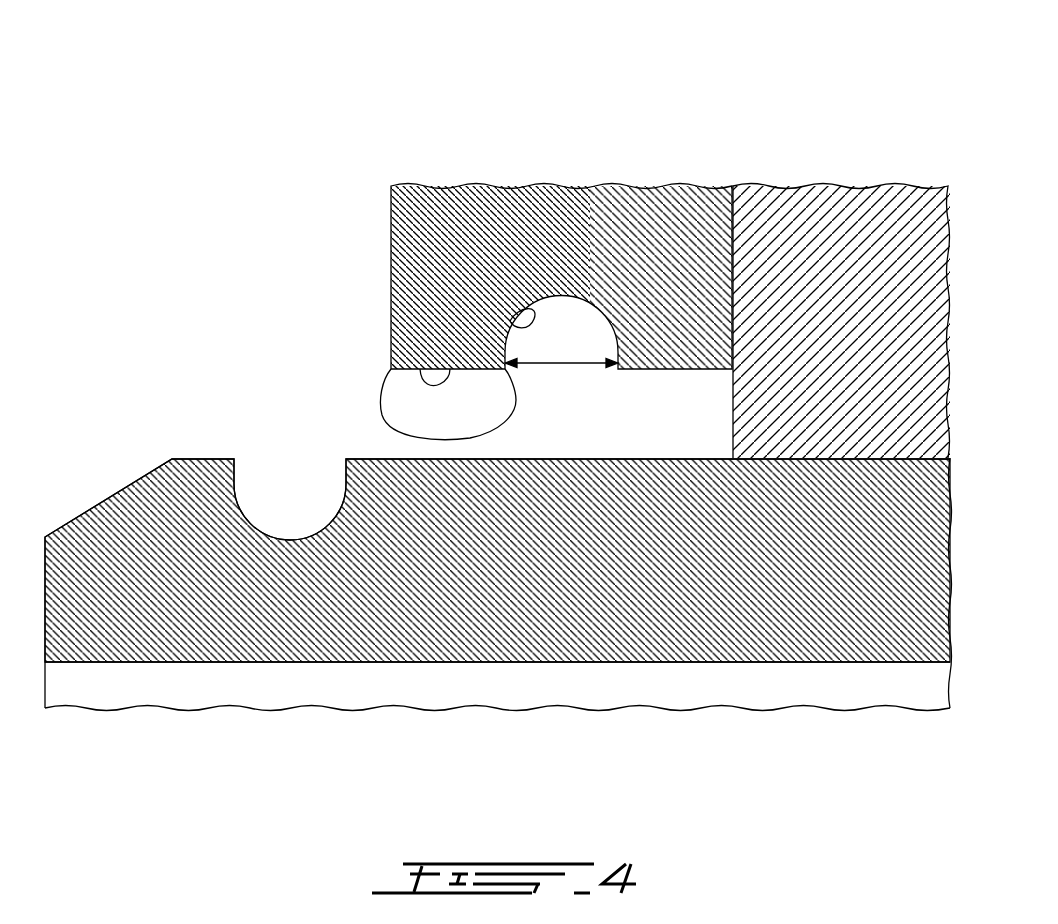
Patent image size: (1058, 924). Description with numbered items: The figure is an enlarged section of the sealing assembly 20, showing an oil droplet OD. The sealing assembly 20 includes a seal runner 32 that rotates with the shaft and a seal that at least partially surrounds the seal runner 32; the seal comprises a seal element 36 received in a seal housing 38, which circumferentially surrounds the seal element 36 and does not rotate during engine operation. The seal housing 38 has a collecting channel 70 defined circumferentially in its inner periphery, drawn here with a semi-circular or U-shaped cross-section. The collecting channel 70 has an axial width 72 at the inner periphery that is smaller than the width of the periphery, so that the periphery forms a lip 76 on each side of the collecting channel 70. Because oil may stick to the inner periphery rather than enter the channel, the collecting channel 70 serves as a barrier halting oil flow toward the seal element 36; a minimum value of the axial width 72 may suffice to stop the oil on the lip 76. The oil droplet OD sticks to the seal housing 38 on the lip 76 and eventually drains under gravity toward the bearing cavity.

The sealing assembly 20 is at (158, 163).
The seal runner 32 is at (170, 610).
The seal element 36 is at (845, 240).
The seal housing 38 is at (460, 207).
The collecting channel 70 is at (510, 322).
The axial width 72 is at (560, 362).
The lip 76 is at (413, 358).
The oil droplet OD is at (403, 398).